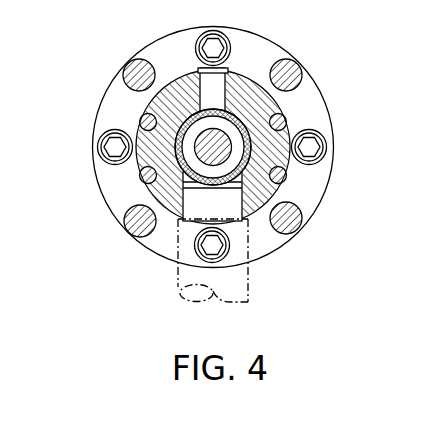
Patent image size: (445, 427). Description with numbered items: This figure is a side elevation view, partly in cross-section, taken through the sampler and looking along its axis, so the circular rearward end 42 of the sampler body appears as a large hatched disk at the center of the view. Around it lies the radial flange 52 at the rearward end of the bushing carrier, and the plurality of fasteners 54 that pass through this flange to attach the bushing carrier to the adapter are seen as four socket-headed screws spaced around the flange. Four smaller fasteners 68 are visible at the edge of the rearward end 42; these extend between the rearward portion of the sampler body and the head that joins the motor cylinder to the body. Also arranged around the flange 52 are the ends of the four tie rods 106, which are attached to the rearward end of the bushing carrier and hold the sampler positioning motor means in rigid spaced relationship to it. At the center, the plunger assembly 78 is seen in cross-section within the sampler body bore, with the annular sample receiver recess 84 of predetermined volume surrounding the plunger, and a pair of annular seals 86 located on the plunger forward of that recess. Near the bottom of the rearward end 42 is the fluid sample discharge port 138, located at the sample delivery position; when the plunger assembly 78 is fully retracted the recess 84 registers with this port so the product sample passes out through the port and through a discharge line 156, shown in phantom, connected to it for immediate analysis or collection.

The rearward end of sampler body 42 is at (182, 90).
The radial flange 52 is at (307, 200).
The fasteners 54 is at (212, 47).
The fasteners 68 is at (139, 120).
The plunger assembly 78 is at (203, 155).
The annular sample receiver recess 84 is at (232, 125).
The annular seals 86 is at (250, 120).
The tie rods 106 is at (137, 72).
The fluid sample discharge port 138 is at (213, 205).
The discharge line 156 is at (250, 277).